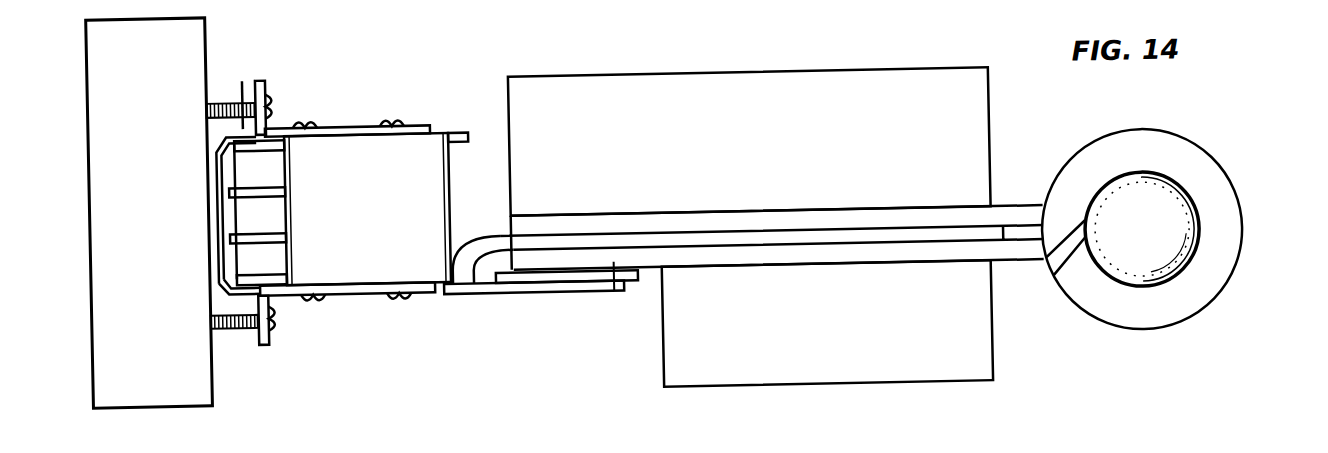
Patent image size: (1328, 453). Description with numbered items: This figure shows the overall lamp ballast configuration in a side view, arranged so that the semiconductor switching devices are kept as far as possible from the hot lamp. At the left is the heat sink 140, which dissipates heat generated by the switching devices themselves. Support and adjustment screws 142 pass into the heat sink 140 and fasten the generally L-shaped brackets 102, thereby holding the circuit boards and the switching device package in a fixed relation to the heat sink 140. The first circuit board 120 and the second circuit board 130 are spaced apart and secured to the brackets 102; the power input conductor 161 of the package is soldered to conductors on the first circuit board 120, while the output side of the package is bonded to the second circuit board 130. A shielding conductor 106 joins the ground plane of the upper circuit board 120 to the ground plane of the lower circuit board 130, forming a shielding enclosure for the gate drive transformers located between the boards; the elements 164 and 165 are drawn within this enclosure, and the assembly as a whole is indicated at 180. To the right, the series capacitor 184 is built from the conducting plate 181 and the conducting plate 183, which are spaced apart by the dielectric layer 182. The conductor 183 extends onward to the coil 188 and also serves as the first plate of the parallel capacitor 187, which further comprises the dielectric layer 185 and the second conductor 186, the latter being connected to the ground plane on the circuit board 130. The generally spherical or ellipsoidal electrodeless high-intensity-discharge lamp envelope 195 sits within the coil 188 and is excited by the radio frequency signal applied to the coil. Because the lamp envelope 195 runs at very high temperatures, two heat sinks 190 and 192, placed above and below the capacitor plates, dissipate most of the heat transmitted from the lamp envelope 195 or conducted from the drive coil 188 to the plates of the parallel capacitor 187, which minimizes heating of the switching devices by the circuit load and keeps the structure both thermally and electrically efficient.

The heat sink 140 is at (178, 214).
The support and adjustment screws 142 is at (227, 96).
The power input conductor 161 is at (244, 81).
The brackets 102 is at (358, 122).
The shielding conductor 106 is at (436, 216).
The first circuit board 120 is at (460, 128).
The upper shelf plate 164 is at (262, 186).
The middle shelf plate 165 is at (262, 232).
The second circuit board 130 is at (262, 276).
The nozzle assembly 180 is at (700, 64).
The heat sink 192 is at (812, 75).
The heat sink 190 is at (852, 388).
The conducting plate 181 is at (617, 262).
The dielectric layer 182 is at (617, 272).
The conducting plate 183 is at (613, 290).
The capacitor 184 is at (759, 329).
The dielectric layer 185 is at (922, 248).
The second conductor 186 is at (912, 232).
The parallel capacitor 187 is at (1078, 320).
The coil 188 is at (1076, 178).
The lamp envelope 195 is at (1163, 264).